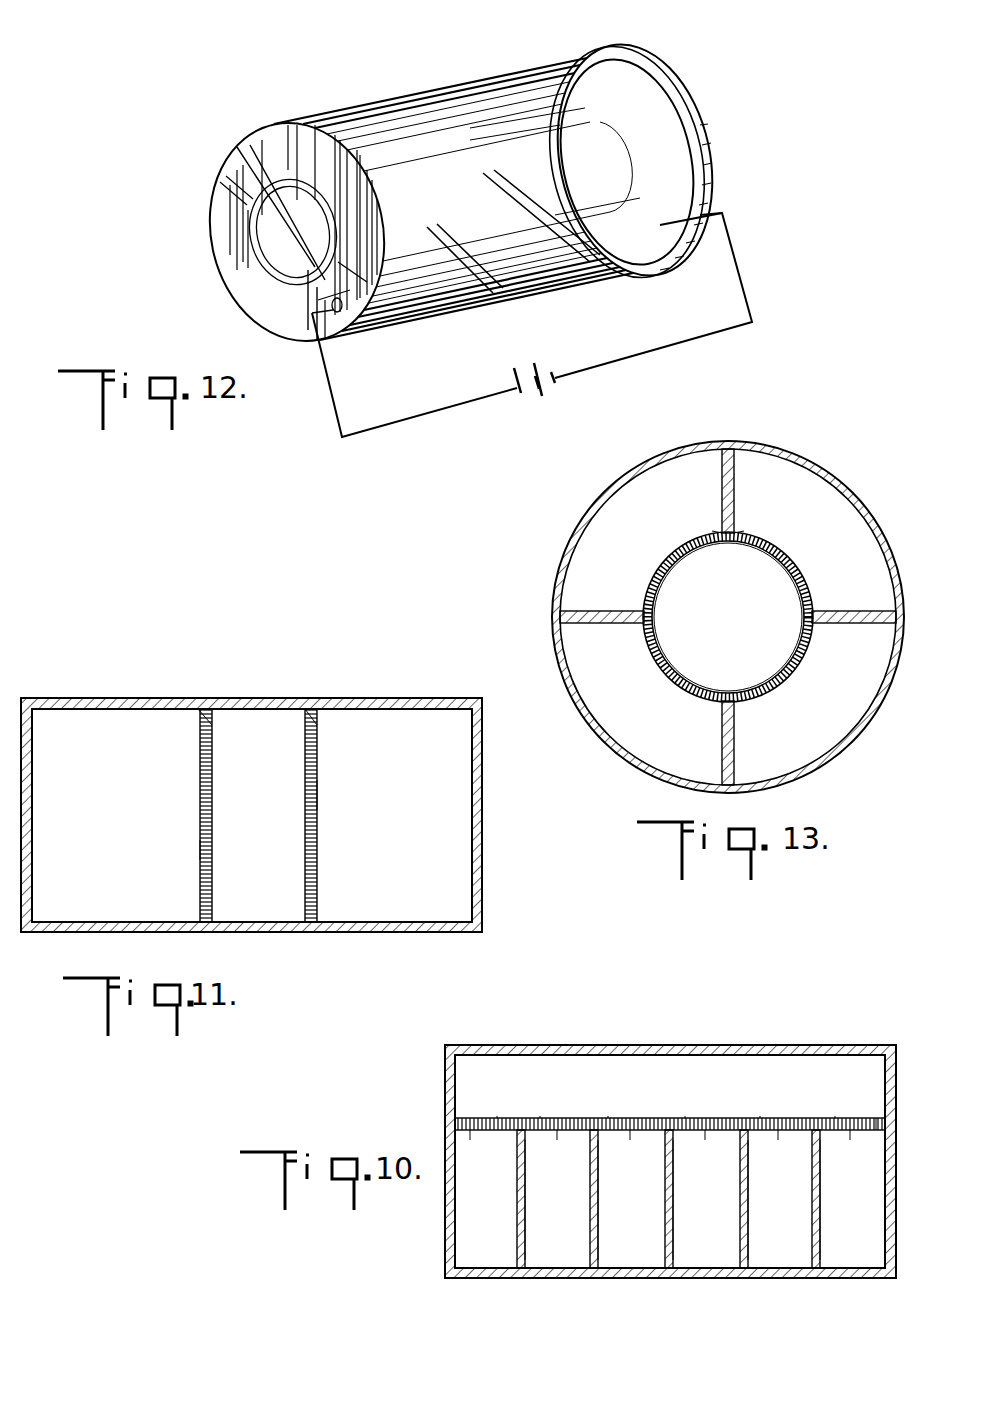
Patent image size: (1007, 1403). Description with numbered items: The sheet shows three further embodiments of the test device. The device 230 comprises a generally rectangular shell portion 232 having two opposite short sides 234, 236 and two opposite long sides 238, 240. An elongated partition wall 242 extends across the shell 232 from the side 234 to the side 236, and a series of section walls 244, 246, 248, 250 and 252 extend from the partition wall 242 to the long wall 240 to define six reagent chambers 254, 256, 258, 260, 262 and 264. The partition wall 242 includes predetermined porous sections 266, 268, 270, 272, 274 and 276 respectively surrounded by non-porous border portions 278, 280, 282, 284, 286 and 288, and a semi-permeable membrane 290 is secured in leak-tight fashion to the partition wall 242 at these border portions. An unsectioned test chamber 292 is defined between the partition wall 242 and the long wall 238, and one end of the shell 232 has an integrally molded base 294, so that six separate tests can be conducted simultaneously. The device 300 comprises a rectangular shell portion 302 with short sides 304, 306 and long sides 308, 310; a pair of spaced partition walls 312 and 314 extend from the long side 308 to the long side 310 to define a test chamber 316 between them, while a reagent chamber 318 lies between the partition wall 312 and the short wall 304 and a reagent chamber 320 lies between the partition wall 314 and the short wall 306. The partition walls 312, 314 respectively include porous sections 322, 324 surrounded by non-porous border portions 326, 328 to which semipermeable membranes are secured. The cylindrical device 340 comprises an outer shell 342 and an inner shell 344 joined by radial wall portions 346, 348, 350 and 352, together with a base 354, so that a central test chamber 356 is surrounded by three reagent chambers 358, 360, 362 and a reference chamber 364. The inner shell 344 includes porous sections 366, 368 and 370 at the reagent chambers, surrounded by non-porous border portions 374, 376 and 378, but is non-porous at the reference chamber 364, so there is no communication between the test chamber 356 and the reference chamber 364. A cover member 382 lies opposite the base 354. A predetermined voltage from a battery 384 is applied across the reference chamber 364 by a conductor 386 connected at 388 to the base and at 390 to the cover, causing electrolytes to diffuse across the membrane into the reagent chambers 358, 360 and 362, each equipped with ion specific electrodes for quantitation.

In FIG. 10, the device 230 is at (764, 996).
In FIG. 10, the shell portion 232 is at (903, 1060).
In FIG. 10, the short side 234 is at (896, 1200).
In FIG. 10, the short side 236 is at (447, 1238).
In FIG. 10, the long side 238 is at (670, 1046).
In FIG. 10, the long side 240 is at (690, 1279).
In FIG. 10, the partition wall 242 is at (884, 1130).
In FIG. 10, the section wall 244 is at (518, 1255).
In FIG. 10, the section wall 246 is at (592, 1255).
In FIG. 10, the section wall 248 is at (666, 1255).
In FIG. 10, the section wall 250 is at (740, 1255).
In FIG. 10, the section wall 252 is at (813, 1255).
In FIG. 10, the reagent chamber 254 is at (510, 1223).
In FIG. 10, the reagent chamber 256 is at (585, 1223).
In FIG. 10, the reagent chamber 258 is at (657, 1223).
In FIG. 10, the reagent chamber 260 is at (730, 1223).
In FIG. 10, the reagent chamber 262 is at (802, 1223).
In FIG. 10, the reagent chamber 264 is at (875, 1223).
In FIG. 10, the porous section 266 is at (482, 1131).
In FIG. 10, the porous section 268 is at (560, 1131).
In FIG. 10, the porous section 270 is at (633, 1131).
In FIG. 10, the porous section 272 is at (708, 1131).
In FIG. 10, the porous section 274 is at (778, 1131).
In FIG. 10, the porous section 276 is at (850, 1131).
In FIG. 10, the non-porous border portion 278 is at (503, 1117).
In FIG. 10, the non-porous border portion 280 is at (535, 1117).
In FIG. 10, the non-porous border portion 282 is at (610, 1117).
In FIG. 10, the non-porous border portion 284 is at (683, 1117).
In FIG. 10, the non-porous border portion 286 is at (763, 1117).
In FIG. 10, the non-porous border portion 288 is at (836, 1117).
In FIG. 10, the semi-permeable membrane 290 is at (870, 1115).
In FIG. 10, the test chamber 292 is at (703, 1090).
In FIG. 10, the base 294 is at (820, 1060).
In FIG. 11, the device 300 is at (127, 664).
In FIG. 11, the shell portion 302 is at (166, 695).
In FIG. 11, the short side 304 is at (20, 732).
In FIG. 11, the short side 306 is at (483, 795).
In FIG. 11, the long side 308 is at (377, 697).
In FIG. 11, the long side 310 is at (355, 933).
In FIG. 11, the partition wall 312 is at (200, 892).
In FIG. 11, the partition wall 314 is at (320, 865).
In FIG. 11, the test chamber 316 is at (285, 828).
In FIG. 11, the reagent chamber 318 is at (140, 828).
In FIG. 11, the reagent chamber 320 is at (425, 828).
In FIG. 11, the porous section 322 is at (200, 848).
In FIG. 11, the porous section 324 is at (318, 795).
In FIG. 11, the non-porous border portion 326 is at (198, 714).
In FIG. 11, the non-porous border portion 328 is at (318, 714).
In FIG. 12, the device 340 is at (272, 50).
In FIG. 13, the device 340 is at (855, 428).
In FIG. 13, the outer shell 342 is at (898, 546).
In FIG. 13, the inner shell 344 is at (815, 660).
In FIG. 13, the radial wall portion 346 is at (805, 615).
In FIG. 13, the radial wall portion 348 is at (680, 781).
In FIG. 13, the radial wall portion 350 is at (560, 635).
In FIG. 13, the radial wall portion 352 is at (760, 427).
In FIG. 12, the base 354 is at (230, 227).
In FIG. 13, the base 354 is at (780, 470).
In FIG. 13, the test chamber 356 is at (748, 618).
In FIG. 12, the reagent chamber 358 is at (247, 300).
In FIG. 13, the reagent chamber 358 is at (662, 720).
In FIG. 12, the reagent chamber 360 is at (255, 135).
In FIG. 13, the reagent chamber 360 is at (652, 550).
In FIG. 12, the reagent chamber 362 is at (330, 137).
In FIG. 13, the reagent chamber 362 is at (850, 555).
In FIG. 12, the reference chamber 364 is at (303, 338).
In FIG. 13, the reference chamber 364 is at (835, 720).
In FIG. 13, the porous section 366 is at (690, 702).
In FIG. 13, the porous section 368 is at (655, 566).
In FIG. 13, the porous section 370 is at (808, 590).
In FIG. 13, the non-porous border portion 374 is at (640, 635).
In FIG. 13, the non-porous border portion 376 is at (712, 532).
In FIG. 13, the non-porous border portion 378 is at (741, 532).
In FIG. 12, the cover member 382 is at (680, 104).
In FIG. 12, the battery 384 is at (545, 390).
In FIG. 12, the conductor 386 is at (408, 422).
In FIG. 12, the connection 388 is at (343, 313).
In FIG. 12, the connection 390 is at (700, 212).